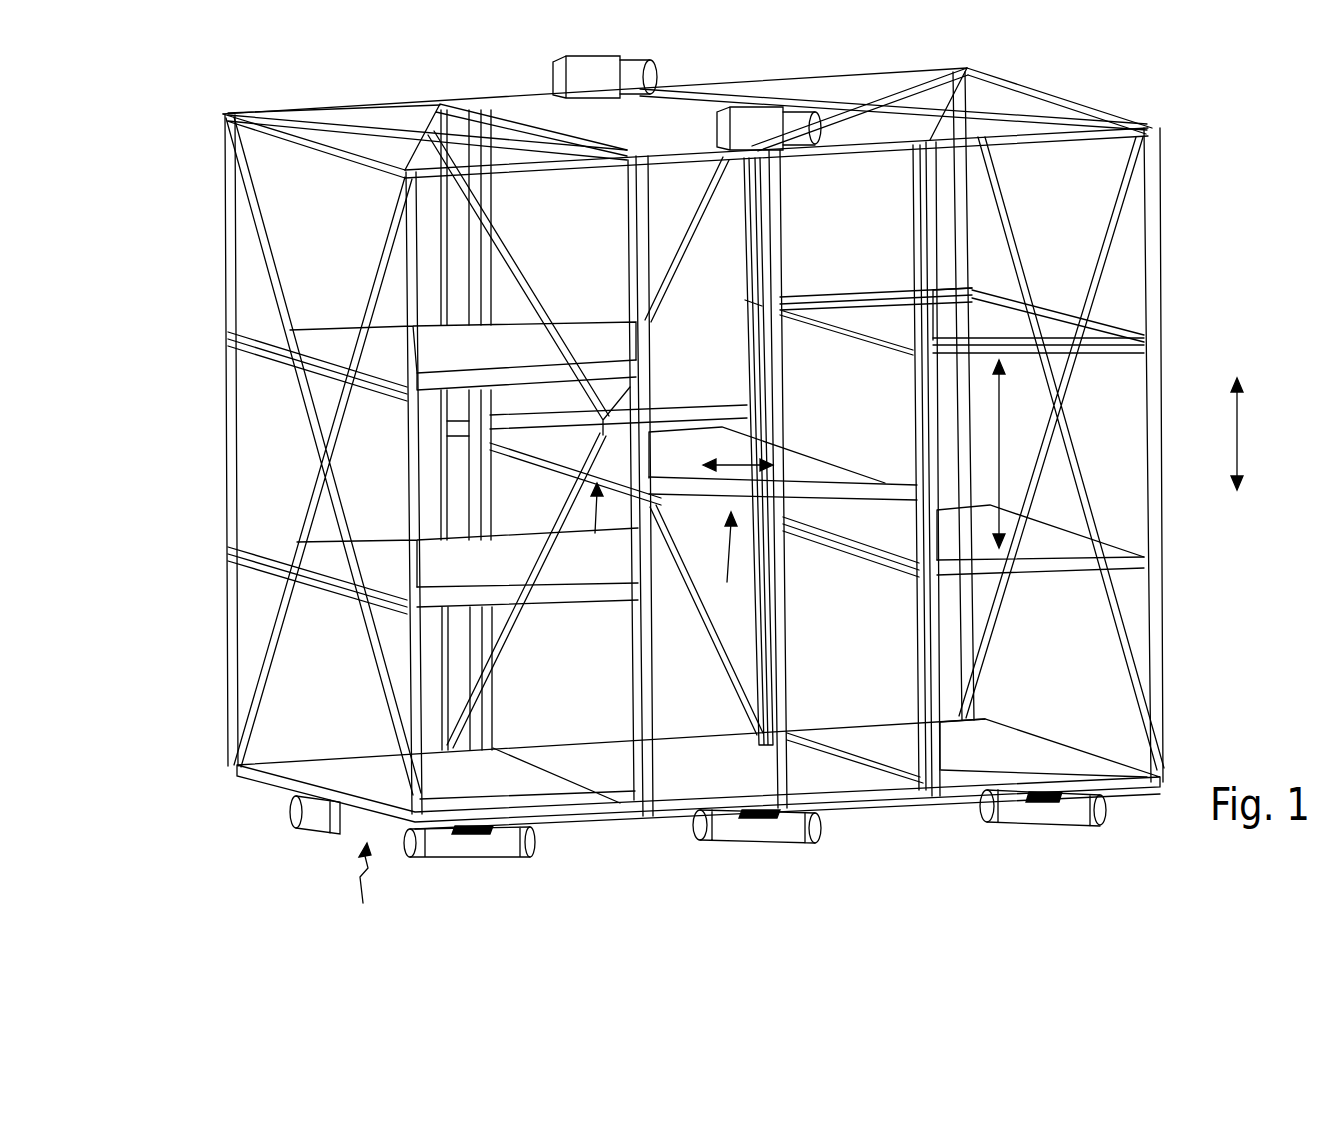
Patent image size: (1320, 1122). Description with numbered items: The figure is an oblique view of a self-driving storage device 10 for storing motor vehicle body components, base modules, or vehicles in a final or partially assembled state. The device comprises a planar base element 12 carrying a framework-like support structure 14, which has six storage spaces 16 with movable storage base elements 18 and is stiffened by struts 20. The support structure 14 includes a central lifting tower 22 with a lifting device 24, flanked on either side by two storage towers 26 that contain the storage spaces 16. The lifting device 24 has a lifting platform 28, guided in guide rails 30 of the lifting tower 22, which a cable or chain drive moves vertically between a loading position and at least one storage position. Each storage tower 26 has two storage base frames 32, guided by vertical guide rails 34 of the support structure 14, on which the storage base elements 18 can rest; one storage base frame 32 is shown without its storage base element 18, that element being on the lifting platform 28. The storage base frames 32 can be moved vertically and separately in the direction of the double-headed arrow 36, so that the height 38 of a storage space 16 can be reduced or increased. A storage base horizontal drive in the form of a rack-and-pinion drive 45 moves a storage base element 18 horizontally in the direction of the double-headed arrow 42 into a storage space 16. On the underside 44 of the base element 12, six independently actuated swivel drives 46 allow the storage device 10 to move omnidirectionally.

The self-driving storage device 10 is at (1213, 180).
The base element 12 is at (1143, 782).
The support structure 14 is at (1160, 630).
The storage spaces 16 is at (270, 337).
The storage base elements 18 is at (324, 340).
The struts 20 is at (388, 135).
The lifting tower 22 is at (684, 103).
The lifting device 24 is at (725, 565).
The storage towers 26 is at (341, 128).
The lifting platform 28 is at (592, 526).
The guide rails 30 is at (770, 251).
The storage base frames 32 is at (265, 350).
The vertical guide rails 34 is at (750, 213).
The double-headed arrow 36 is at (1240, 432).
The height 38 is at (1005, 462).
The double-headed arrow 42 is at (742, 462).
The underside 44 is at (841, 806).
The rack-and-pinion drive 45 is at (356, 890).
The swivel drives 46 is at (326, 822).